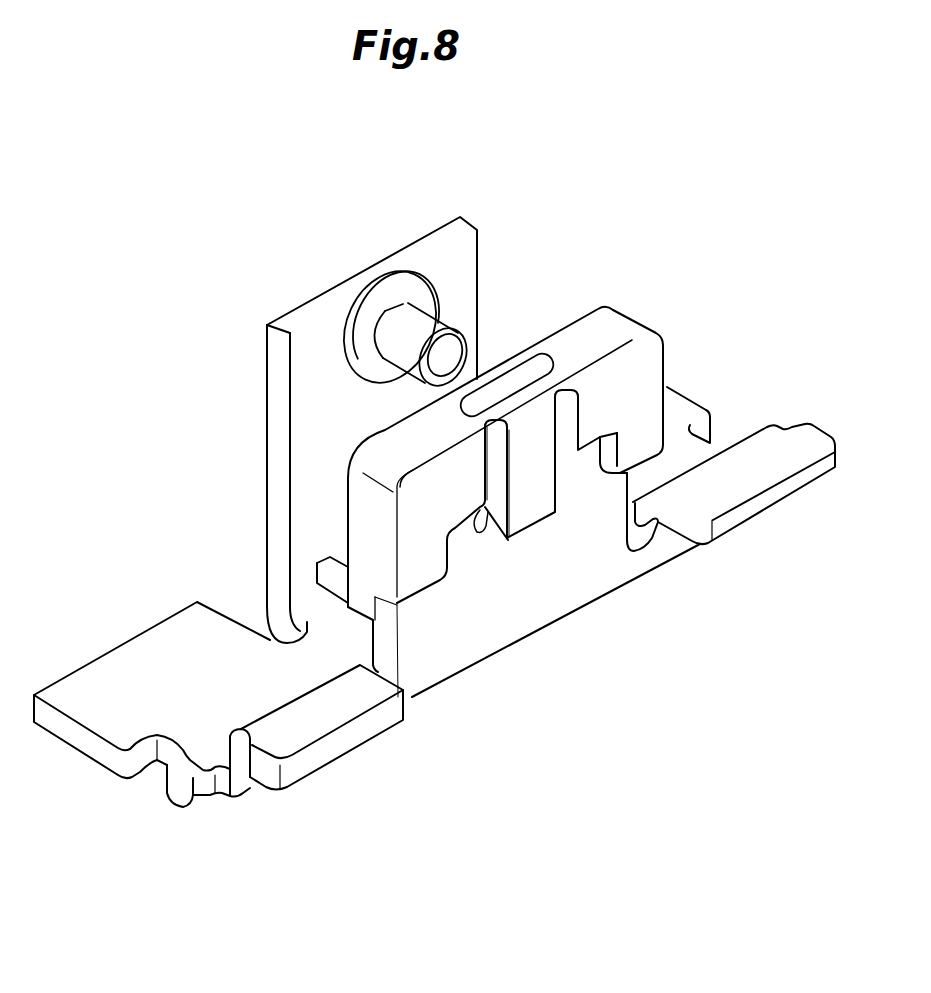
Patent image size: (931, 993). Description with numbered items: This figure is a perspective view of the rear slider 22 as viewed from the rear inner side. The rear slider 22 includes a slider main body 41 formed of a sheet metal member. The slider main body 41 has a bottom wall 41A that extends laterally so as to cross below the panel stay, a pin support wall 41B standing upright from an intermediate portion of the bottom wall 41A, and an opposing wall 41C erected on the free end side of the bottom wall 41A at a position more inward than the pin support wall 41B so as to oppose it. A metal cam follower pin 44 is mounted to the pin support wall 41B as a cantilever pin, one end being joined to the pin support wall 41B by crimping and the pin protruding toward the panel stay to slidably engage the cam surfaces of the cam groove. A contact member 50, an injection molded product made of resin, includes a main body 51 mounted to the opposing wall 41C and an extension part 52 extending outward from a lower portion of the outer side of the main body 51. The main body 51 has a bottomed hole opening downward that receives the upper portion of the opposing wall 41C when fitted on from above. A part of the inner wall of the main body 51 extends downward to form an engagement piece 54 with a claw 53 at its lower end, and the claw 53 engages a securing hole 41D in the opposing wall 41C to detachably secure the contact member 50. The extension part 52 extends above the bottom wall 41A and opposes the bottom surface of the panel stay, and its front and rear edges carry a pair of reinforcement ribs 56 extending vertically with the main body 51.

The rear slider 22 is at (215, 248).
The slider main body 41 is at (259, 484).
The bottom wall 41A is at (198, 720).
The pin support wall 41B is at (318, 345).
The opposing wall 41C is at (588, 567).
The securing hole 41D is at (485, 533).
The cam follower pin 44 is at (418, 323).
The contact member 50 is at (638, 314).
The main body 51 is at (652, 368).
The extension part 52 is at (345, 556).
The claw 53 is at (490, 533).
The engagement piece 54 is at (537, 503).
The reinforcement ribs 56 is at (325, 562).